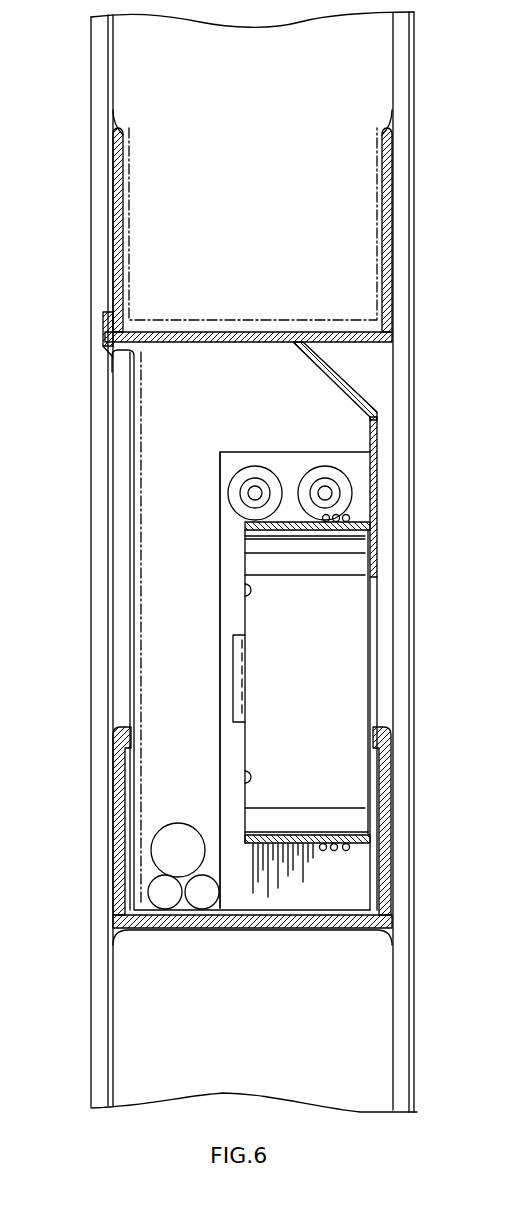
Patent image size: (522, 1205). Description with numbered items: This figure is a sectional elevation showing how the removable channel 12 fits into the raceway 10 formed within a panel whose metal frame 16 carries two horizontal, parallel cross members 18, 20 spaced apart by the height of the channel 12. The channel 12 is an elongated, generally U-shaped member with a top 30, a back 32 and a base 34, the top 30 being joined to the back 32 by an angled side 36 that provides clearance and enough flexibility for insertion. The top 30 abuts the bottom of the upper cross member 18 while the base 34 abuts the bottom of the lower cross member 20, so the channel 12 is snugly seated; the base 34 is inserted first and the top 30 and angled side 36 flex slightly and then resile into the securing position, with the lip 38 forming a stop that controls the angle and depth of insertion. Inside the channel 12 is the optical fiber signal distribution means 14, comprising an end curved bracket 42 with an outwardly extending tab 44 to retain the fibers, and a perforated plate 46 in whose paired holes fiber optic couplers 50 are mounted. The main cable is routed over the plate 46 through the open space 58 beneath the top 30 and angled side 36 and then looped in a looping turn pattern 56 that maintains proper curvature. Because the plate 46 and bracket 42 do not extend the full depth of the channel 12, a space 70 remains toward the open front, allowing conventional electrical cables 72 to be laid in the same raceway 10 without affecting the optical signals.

The raceway 10 is at (162, 673).
The removable channel 12 is at (365, 394).
The optical fiber signal distribution means 14 is at (199, 461).
The metal frame 16 is at (408, 77).
The cross member 18 is at (133, 198).
The cross member 20 is at (392, 853).
The top 30 is at (202, 347).
The back 32 is at (373, 480).
The base 34 is at (240, 908).
The angled side 36 is at (327, 378).
The lip 38 is at (105, 325).
The end curved bracket 42 is at (255, 615).
The tab 44 is at (233, 662).
The perforated plate 46 is at (227, 555).
The fiber optic coupler 50 is at (243, 493).
The looping turn pattern 56 is at (338, 857).
The open space 58 is at (283, 437).
The space 70 is at (197, 714).
The electrical cable 72 is at (177, 821).